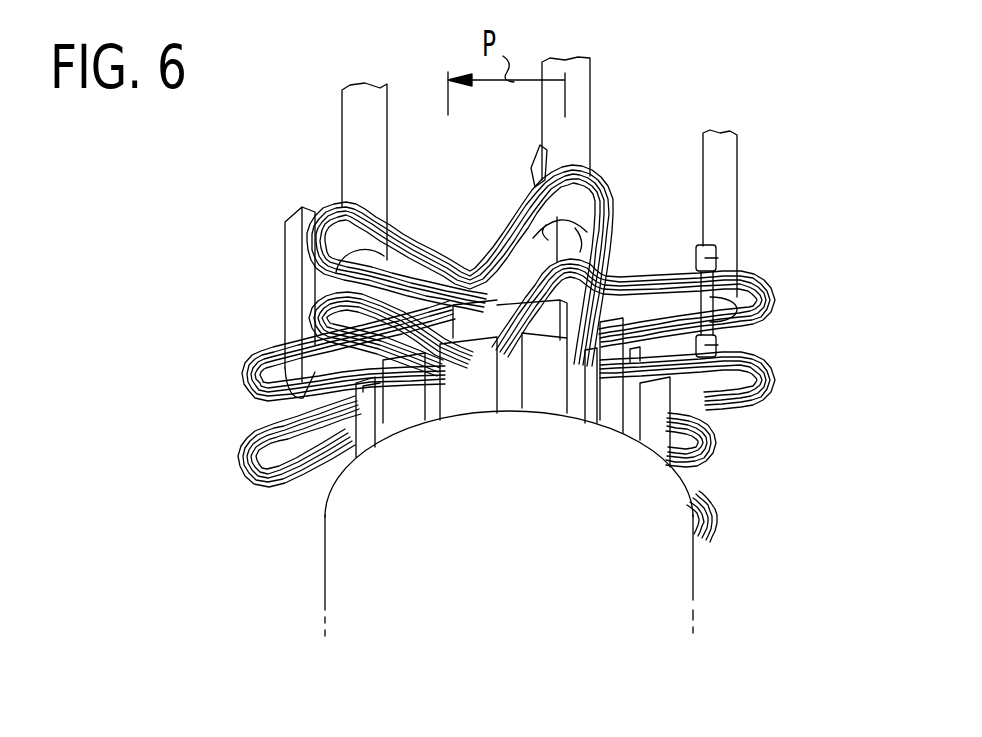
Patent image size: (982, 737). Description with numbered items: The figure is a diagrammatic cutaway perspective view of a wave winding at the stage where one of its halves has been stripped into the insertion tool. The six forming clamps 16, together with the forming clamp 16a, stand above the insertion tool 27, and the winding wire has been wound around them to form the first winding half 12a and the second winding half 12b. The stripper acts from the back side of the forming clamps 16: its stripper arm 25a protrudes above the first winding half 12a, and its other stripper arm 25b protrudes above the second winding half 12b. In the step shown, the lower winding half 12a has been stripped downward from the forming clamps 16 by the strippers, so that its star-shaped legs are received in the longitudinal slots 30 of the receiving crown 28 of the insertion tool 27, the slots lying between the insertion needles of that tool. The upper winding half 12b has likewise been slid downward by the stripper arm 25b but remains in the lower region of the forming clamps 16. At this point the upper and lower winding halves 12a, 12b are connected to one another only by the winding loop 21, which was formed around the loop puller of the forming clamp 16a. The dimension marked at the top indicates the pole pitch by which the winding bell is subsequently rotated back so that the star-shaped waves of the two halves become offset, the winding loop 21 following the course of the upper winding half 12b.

The forming clamp 16a is at (585, 95).
The forming clamps 16 is at (293, 252).
The winding loop 21 is at (528, 240).
The first winding half 12a is at (247, 447).
The second winding half 12b is at (247, 366).
The stripper arm 25a is at (707, 347).
The stripper arm 25b is at (707, 257).
The insertion tool 27 is at (630, 527).
The receiving crown 28 is at (403, 410).
The longitudinal slots 30 is at (640, 430).